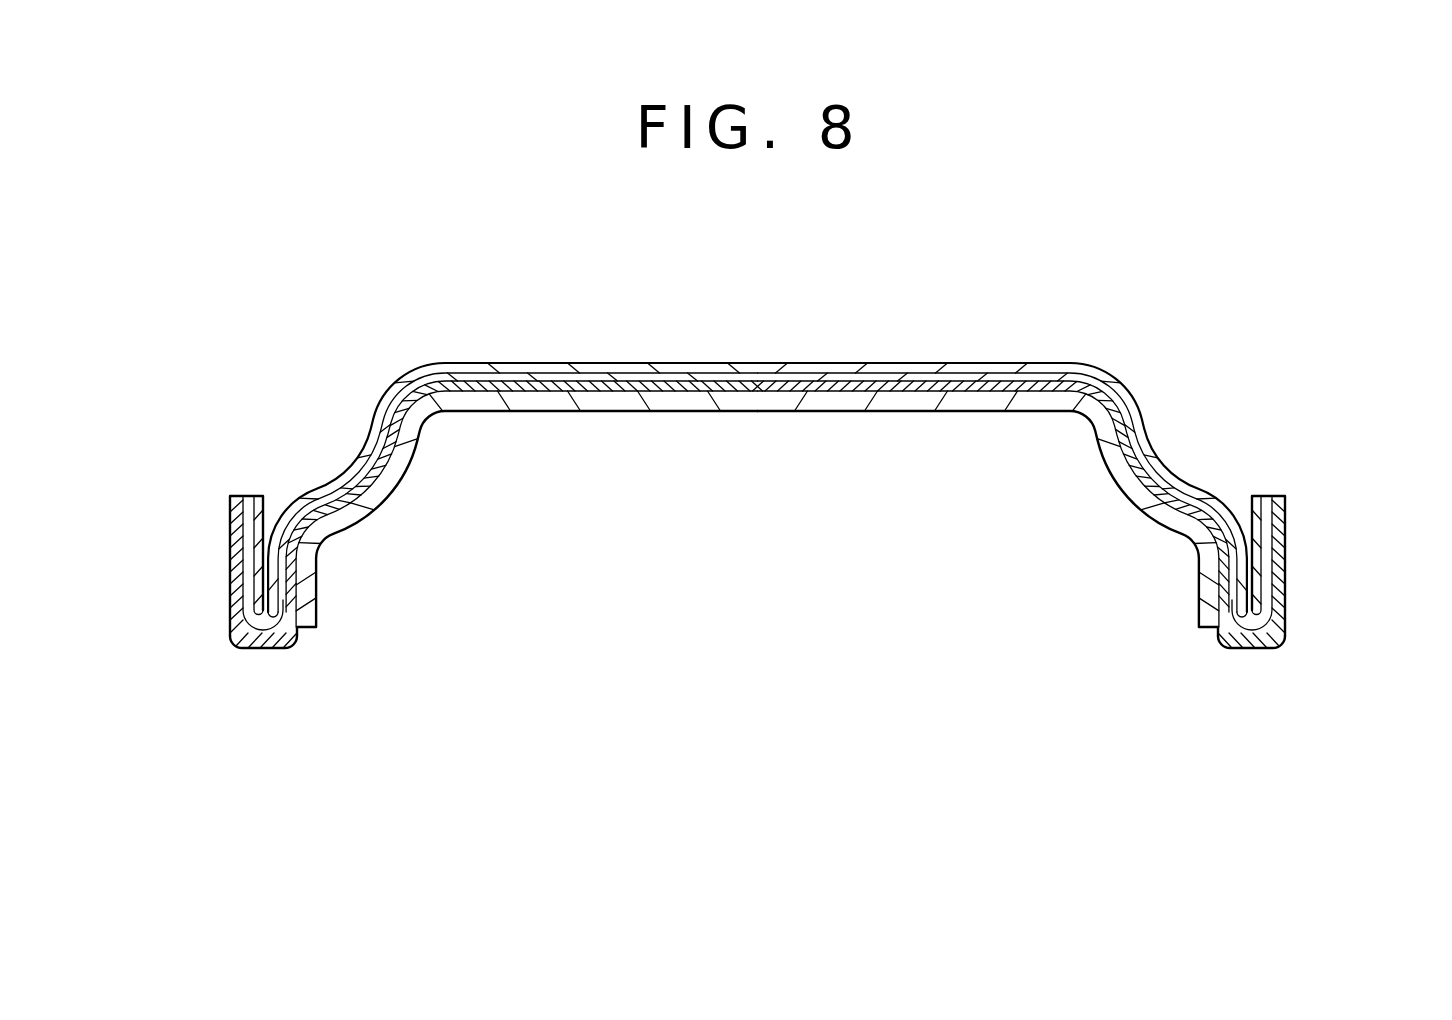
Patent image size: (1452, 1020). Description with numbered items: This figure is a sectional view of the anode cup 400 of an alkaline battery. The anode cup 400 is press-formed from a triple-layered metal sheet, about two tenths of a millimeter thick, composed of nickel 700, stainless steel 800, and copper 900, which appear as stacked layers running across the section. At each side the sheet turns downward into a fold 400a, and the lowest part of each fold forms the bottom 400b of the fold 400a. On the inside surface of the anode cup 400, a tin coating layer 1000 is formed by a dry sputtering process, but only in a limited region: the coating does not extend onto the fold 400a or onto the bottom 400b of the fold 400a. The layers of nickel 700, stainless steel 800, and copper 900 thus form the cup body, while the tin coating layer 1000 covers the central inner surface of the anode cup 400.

The anode cup 400 is at (740, 361).
The fold 400a is at (230, 550).
The bottom of the fold 400b is at (258, 650).
The nickel 700 is at (1018, 361).
The stainless steel 800 is at (1097, 372).
The copper 900 is at (1142, 437).
The tin coating layer 1000 is at (403, 452).